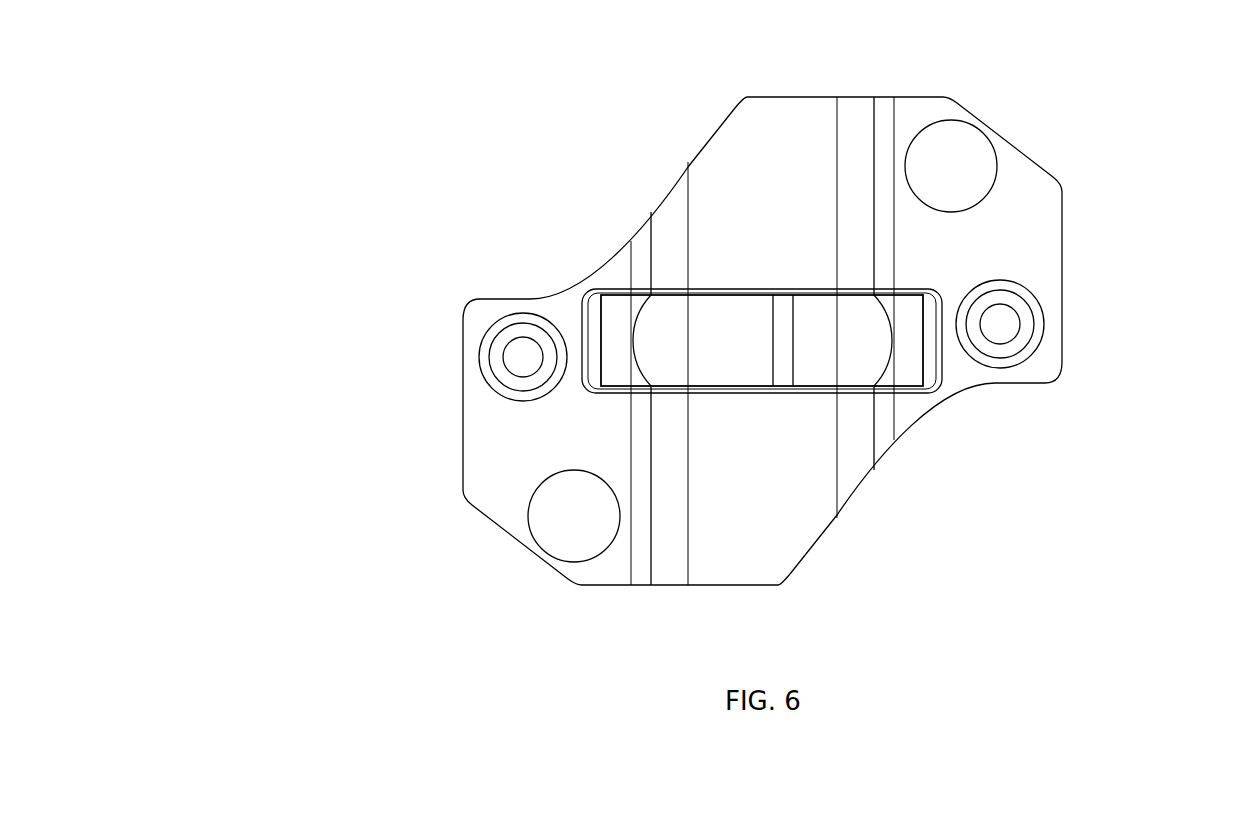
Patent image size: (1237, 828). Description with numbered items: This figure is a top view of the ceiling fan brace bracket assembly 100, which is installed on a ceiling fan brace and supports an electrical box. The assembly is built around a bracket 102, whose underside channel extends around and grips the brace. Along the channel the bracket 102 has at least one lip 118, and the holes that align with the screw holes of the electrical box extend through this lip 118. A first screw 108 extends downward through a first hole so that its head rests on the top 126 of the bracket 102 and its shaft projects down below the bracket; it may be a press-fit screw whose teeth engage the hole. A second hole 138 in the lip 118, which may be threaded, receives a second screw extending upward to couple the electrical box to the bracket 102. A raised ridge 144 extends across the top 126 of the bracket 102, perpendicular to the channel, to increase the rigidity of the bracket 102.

The bracket assembly 100 is at (357, 157).
The bracket 102 is at (797, 140).
The first screw 108 is at (955, 175).
The lip 118 is at (1028, 240).
The top 126 is at (795, 487).
The second hole 138 is at (523, 357).
The raised ridge 144 is at (703, 332).